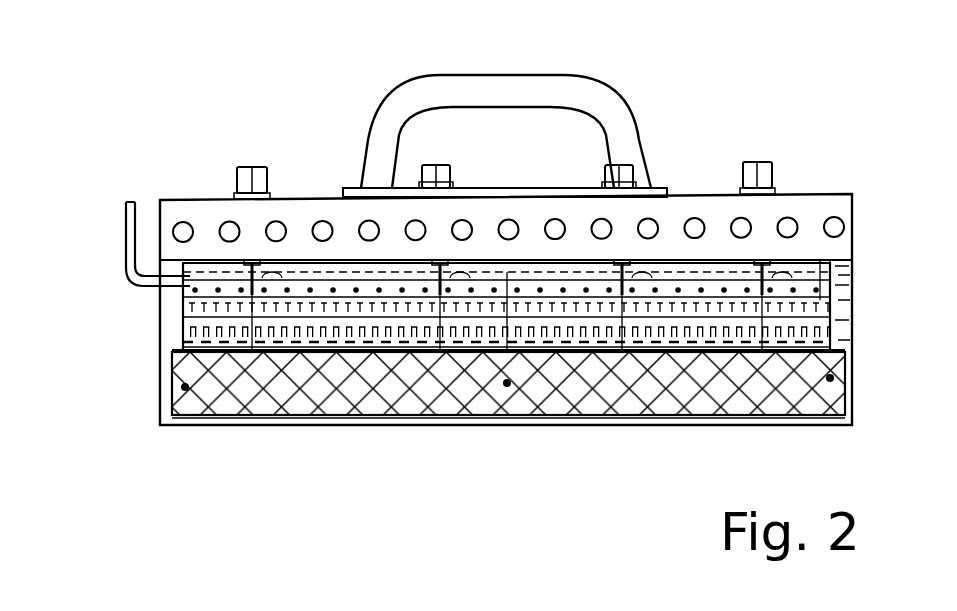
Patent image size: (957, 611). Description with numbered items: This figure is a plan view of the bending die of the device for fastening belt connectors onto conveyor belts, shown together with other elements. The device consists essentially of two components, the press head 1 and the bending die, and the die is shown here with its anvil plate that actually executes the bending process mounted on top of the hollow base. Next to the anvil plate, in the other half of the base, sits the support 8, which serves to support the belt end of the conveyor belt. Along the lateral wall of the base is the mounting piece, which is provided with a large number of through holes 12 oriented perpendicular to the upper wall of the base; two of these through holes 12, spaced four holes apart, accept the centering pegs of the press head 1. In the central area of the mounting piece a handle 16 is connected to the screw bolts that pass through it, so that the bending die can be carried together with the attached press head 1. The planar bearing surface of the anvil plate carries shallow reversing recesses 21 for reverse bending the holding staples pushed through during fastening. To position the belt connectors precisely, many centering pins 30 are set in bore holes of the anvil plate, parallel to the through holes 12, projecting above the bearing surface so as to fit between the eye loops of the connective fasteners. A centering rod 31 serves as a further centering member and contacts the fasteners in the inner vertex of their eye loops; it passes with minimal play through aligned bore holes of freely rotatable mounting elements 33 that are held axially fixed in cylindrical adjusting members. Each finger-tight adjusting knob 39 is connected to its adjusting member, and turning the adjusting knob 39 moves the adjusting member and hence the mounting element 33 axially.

The press head 1 is at (160, 440).
The support 8 is at (590, 400).
The through holes 12 is at (220, 222).
The handle 16 is at (500, 92).
The reversing recesses 21 is at (173, 355).
The centering pins 30 is at (183, 318).
The centering rod 31 is at (127, 236).
The mounting elements 33 is at (838, 328).
The adjusting knob 39 is at (245, 170).